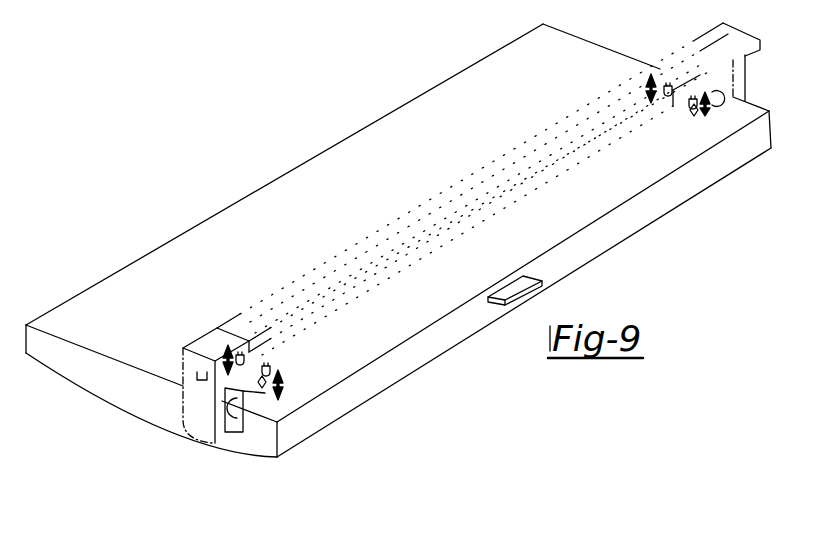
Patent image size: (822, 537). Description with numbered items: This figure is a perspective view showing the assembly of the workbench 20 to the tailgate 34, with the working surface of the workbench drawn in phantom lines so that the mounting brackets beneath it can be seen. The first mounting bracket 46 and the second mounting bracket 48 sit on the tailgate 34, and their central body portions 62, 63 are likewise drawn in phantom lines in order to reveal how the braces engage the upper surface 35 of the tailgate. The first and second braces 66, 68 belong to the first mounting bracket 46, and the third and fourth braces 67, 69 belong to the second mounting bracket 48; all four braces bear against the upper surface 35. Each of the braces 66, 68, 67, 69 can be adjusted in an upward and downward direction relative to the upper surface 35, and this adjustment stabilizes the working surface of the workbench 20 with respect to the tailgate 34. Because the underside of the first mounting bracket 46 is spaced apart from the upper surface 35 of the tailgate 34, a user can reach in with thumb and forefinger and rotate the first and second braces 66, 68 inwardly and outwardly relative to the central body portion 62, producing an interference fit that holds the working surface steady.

The workbench 20 is at (336, 270).
The tailgate 34 is at (179, 297).
The upper surface of tailgate 35 is at (372, 345).
The first mounting bracket 46 is at (216, 411).
The second mounting bracket 48 is at (742, 78).
The central body portion 62 is at (280, 368).
The central body portion 63 is at (684, 112).
The first brace 66 is at (265, 377).
The third brace 67 is at (695, 110).
The second brace 68 is at (253, 363).
The fourth brace 69 is at (668, 100).